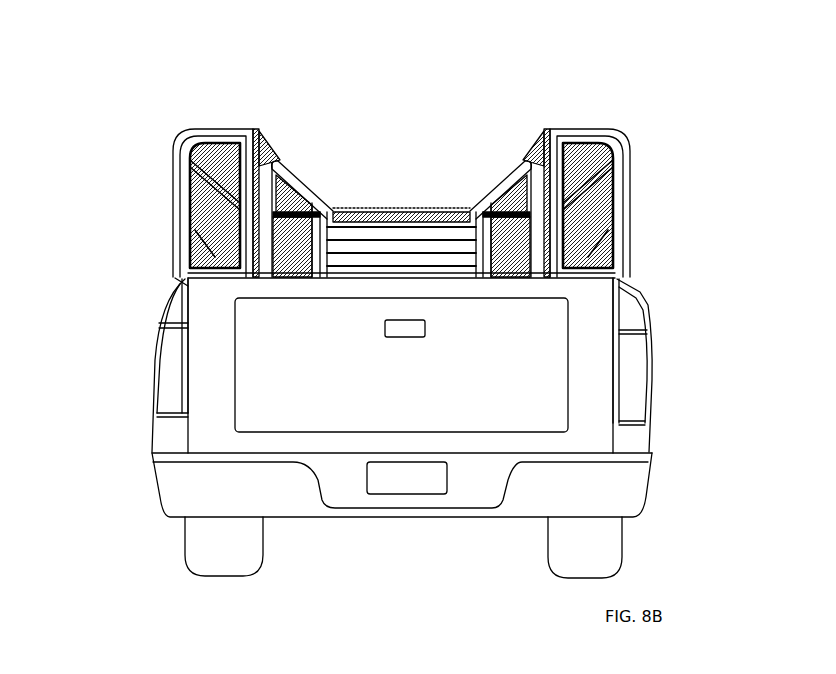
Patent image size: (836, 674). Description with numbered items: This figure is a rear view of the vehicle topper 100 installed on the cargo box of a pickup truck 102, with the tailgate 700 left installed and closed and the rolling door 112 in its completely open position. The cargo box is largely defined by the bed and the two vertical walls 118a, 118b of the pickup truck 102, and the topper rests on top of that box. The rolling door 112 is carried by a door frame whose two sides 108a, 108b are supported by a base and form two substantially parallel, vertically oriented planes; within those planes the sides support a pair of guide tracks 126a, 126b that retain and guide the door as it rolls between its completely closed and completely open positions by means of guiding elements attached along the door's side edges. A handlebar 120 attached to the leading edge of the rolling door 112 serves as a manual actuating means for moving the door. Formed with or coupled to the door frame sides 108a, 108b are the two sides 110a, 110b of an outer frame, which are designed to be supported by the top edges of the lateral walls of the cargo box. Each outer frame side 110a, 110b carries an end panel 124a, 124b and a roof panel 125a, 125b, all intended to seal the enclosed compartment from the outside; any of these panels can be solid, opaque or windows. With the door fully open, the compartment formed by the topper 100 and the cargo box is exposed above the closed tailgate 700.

The vehicle topper 100 is at (210, 78).
The pickup truck 102 is at (712, 323).
The side of door frame 108a is at (280, 122).
The side of door frame 108b is at (533, 157).
The side of outer frame 110a is at (173, 163).
The side of outer frame 110b is at (628, 157).
The rolling door 112 is at (438, 243).
The vertical wall of pickup truck 118a is at (163, 313).
The vertical wall of pickup truck 118b is at (660, 433).
The handlebar 120 is at (337, 207).
The end panel 124a is at (200, 230).
The end panel 124b is at (617, 203).
The roof panel 125a is at (218, 145).
The roof panel 125b is at (575, 163).
The guide track 126a is at (300, 160).
The guide track 126b is at (487, 205).
The tailgate 700 is at (200, 367).